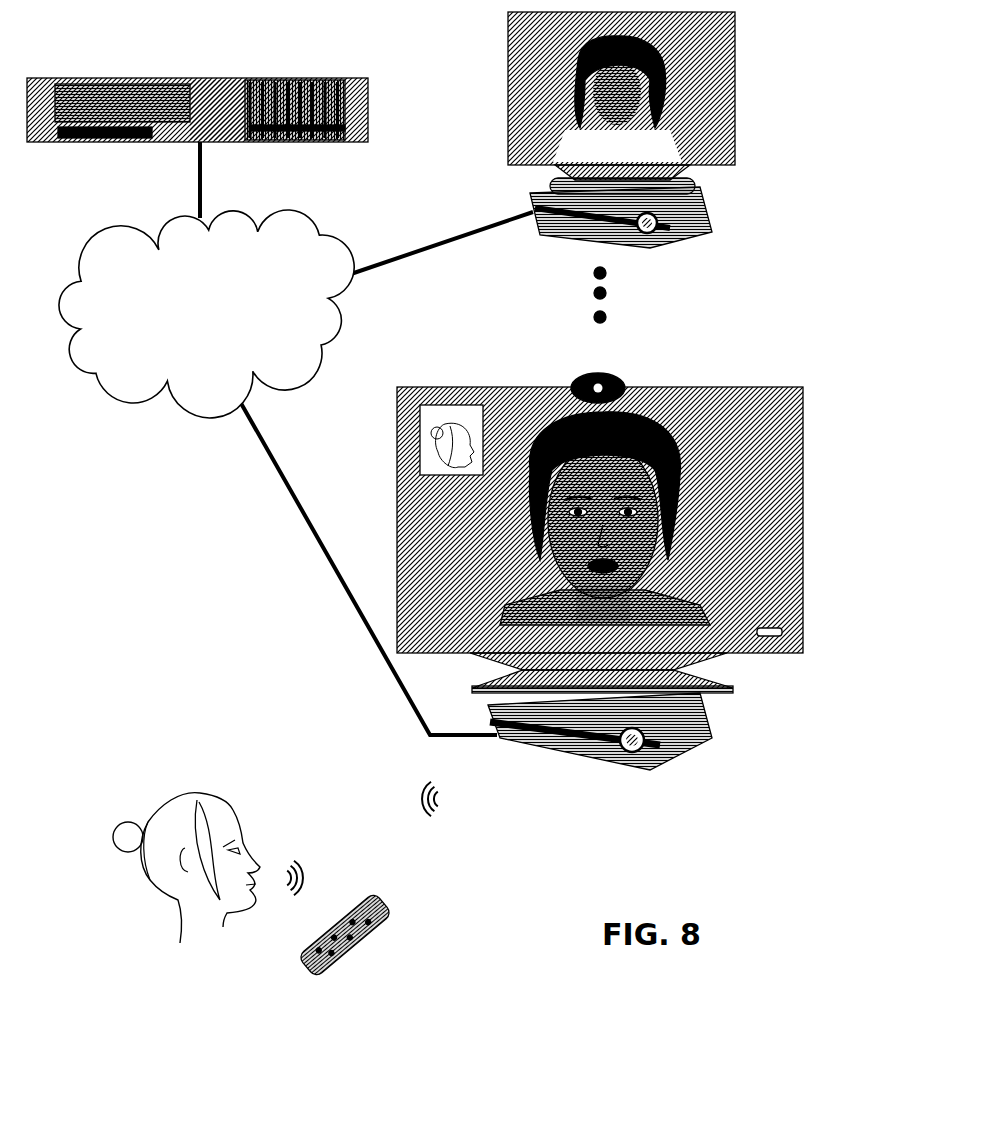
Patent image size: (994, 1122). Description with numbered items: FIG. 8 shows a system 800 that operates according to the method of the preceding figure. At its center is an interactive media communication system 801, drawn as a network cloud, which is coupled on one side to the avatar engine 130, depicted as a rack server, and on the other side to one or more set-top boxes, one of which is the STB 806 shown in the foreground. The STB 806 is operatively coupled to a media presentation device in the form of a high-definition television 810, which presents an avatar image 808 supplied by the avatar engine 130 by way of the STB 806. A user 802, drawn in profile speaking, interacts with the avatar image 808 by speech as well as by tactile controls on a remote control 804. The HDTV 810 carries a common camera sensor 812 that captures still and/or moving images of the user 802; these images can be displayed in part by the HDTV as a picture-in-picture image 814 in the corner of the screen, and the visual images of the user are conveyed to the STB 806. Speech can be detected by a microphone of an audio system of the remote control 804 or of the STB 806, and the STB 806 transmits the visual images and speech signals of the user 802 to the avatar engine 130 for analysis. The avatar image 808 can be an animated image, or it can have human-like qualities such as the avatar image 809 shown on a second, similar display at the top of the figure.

The avatar engine 130 is at (352, 78).
The interactive media communication system 801 is at (218, 331).
The avatar image 809 is at (690, 122).
The high-definition television 810 is at (509, 385).
The avatar image 808 is at (655, 437).
The camera sensor 812 is at (623, 378).
The picture-in-picture image 814 is at (428, 462).
The set-top box 806 is at (678, 752).
The user 802 is at (172, 795).
The remote control 804 is at (363, 937).
The system 800 is at (663, 899).